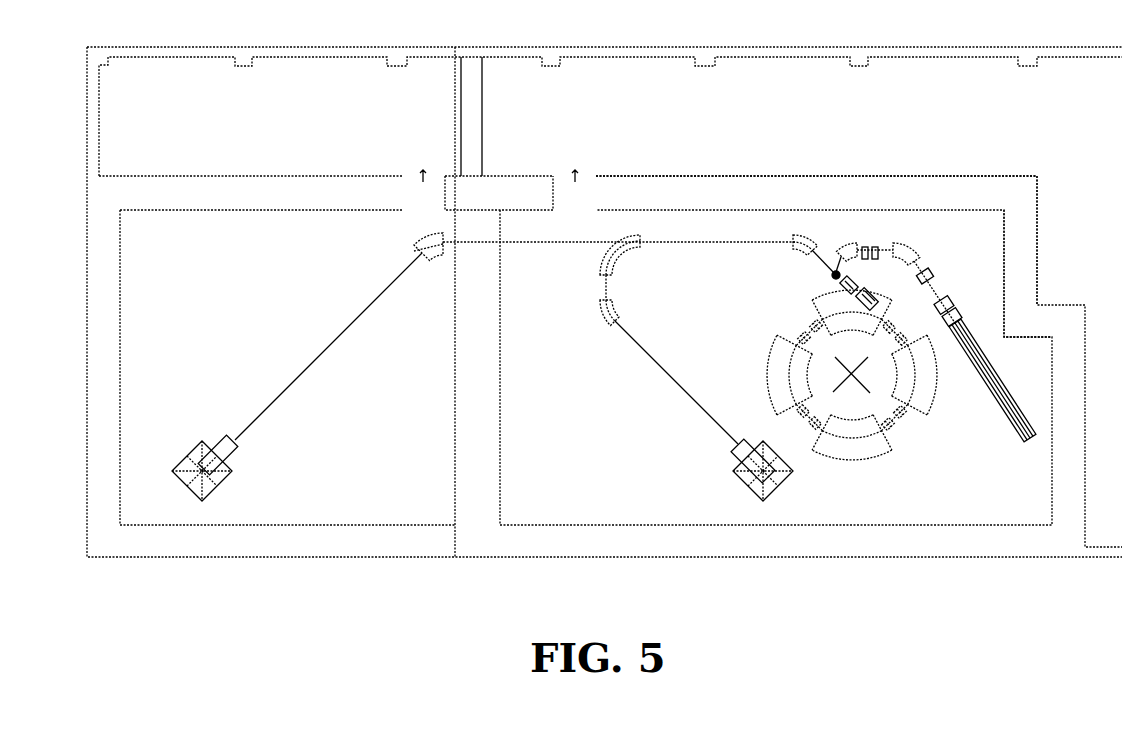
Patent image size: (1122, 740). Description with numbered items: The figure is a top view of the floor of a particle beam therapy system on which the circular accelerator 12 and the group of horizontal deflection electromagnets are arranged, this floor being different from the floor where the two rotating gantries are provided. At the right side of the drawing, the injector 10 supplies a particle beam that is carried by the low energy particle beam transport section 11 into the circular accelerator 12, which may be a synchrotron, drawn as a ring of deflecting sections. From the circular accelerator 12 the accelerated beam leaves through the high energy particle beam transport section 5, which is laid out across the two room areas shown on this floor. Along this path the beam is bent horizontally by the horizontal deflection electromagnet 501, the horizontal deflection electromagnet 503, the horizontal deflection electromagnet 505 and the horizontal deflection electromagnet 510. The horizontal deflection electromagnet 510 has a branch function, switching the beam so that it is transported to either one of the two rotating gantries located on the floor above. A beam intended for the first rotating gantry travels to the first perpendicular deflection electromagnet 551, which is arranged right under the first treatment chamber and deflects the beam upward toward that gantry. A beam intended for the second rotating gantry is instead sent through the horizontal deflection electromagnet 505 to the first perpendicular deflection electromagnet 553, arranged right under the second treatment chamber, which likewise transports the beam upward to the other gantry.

The high energy particle beam transport section 5 is at (423, 313).
The injector 10 is at (978, 378).
The low energy particle beam transport section 11 is at (968, 254).
The circular accelerator 12 is at (868, 417).
The horizontal deflection electromagnet 501 is at (814, 240).
The horizontal deflection electromagnet 503 is at (602, 326).
The horizontal deflection electromagnet 505 is at (418, 235).
The horizontal deflection electromagnet 510 is at (600, 257).
The first perpendicular deflection electromagnet 551 is at (737, 452).
The first perpendicular deflection electromagnet 553 is at (232, 460).